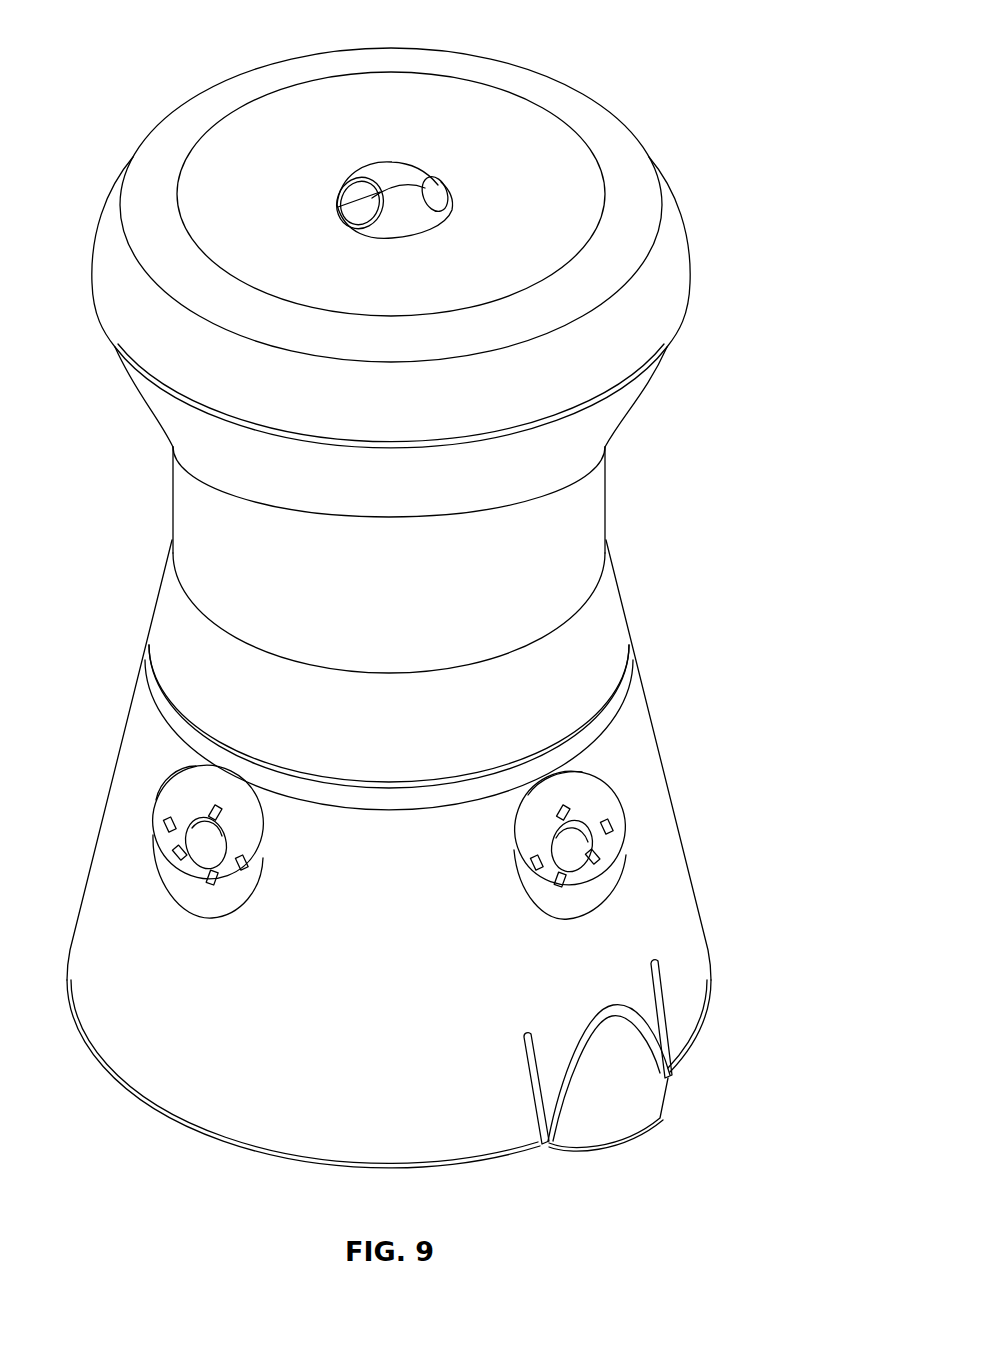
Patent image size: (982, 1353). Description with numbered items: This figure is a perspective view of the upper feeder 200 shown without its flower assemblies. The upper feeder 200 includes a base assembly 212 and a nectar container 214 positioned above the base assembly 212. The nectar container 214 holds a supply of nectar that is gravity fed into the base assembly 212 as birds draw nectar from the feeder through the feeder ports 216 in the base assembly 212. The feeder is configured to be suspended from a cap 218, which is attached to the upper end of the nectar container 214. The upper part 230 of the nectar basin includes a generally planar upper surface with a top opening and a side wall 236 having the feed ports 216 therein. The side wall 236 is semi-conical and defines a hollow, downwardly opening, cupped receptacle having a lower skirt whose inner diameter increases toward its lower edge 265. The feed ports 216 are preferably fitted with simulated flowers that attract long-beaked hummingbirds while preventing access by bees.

The upper feeder 200 is at (702, 44).
The cap 218 is at (575, 109).
The nectar container 214 is at (604, 483).
The base assembly 212 is at (690, 814).
The upper part 230 is at (697, 884).
The side wall 236 is at (270, 1021).
The lower edge 265 is at (197, 1133).
The feeder ports 216 is at (592, 838).